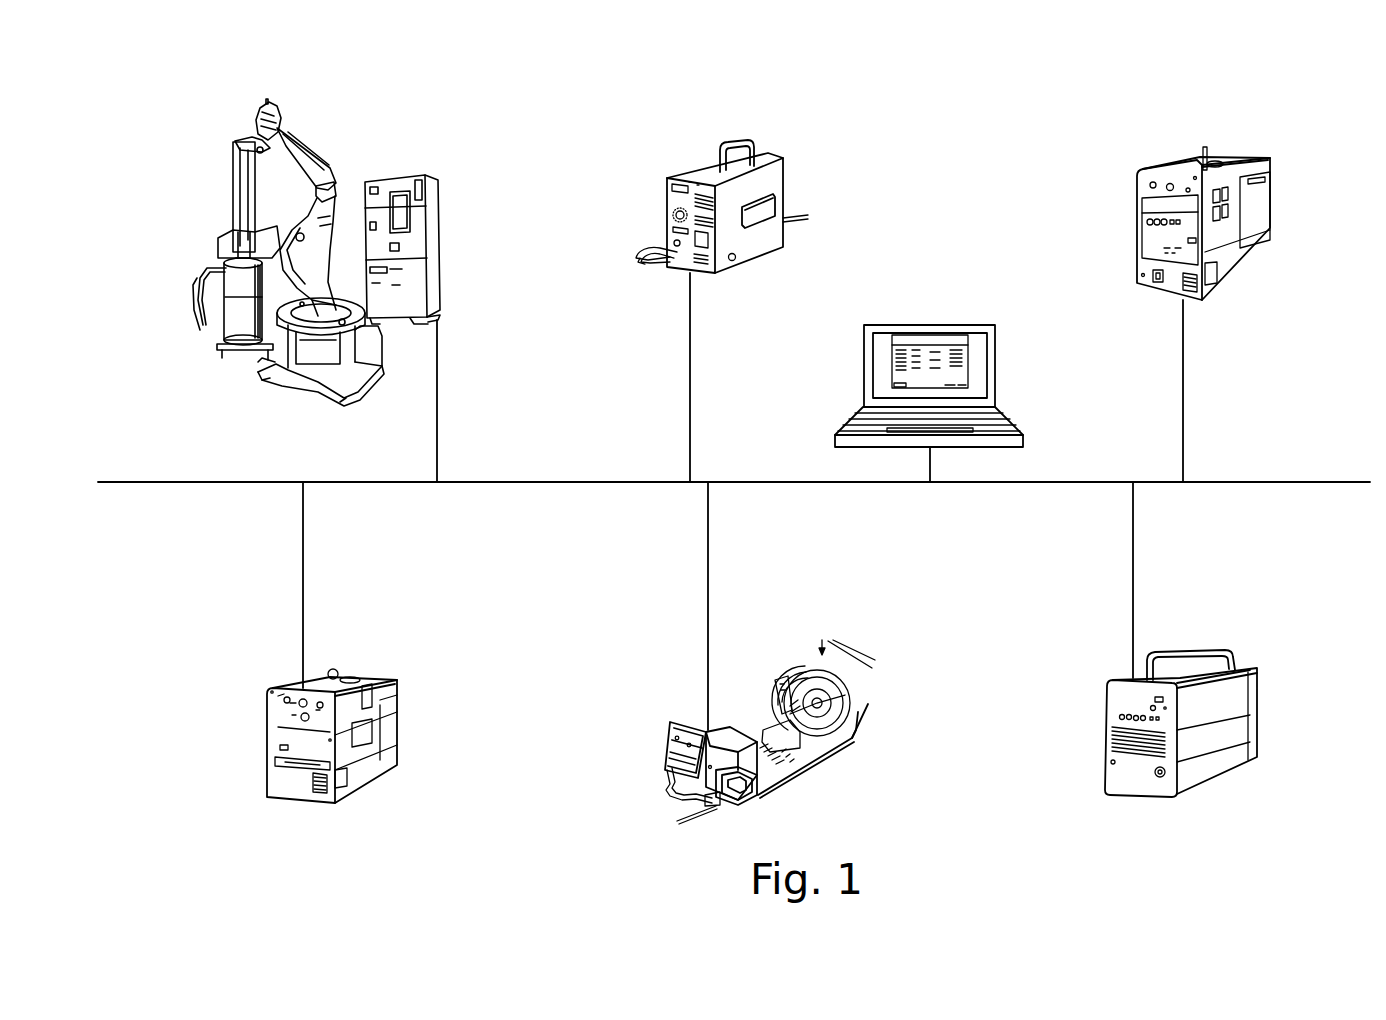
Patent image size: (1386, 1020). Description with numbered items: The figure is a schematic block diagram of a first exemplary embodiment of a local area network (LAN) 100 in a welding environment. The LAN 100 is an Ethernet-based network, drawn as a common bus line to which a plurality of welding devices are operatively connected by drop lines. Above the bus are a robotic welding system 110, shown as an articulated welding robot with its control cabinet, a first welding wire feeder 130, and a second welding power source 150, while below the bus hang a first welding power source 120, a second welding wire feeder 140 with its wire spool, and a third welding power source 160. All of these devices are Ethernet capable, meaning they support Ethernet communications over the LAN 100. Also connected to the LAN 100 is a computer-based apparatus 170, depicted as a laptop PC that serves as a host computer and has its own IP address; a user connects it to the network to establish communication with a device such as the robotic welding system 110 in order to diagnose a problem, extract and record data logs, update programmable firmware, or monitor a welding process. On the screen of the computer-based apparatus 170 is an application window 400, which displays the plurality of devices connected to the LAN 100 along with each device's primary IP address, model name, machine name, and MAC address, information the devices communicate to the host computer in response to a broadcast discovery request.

The local area network (LAN) 100 is at (978, 122).
The robotic welding system 110 is at (255, 93).
The first welding power source 120 is at (378, 677).
The first welding wire feeder 130 is at (680, 172).
The second welding wire feeder 140 is at (680, 720).
The second welding power source 150 is at (1160, 165).
The third welding power source 160 is at (1110, 683).
The computer-based apparatus 170 is at (955, 325).
The application window 400 is at (960, 353).